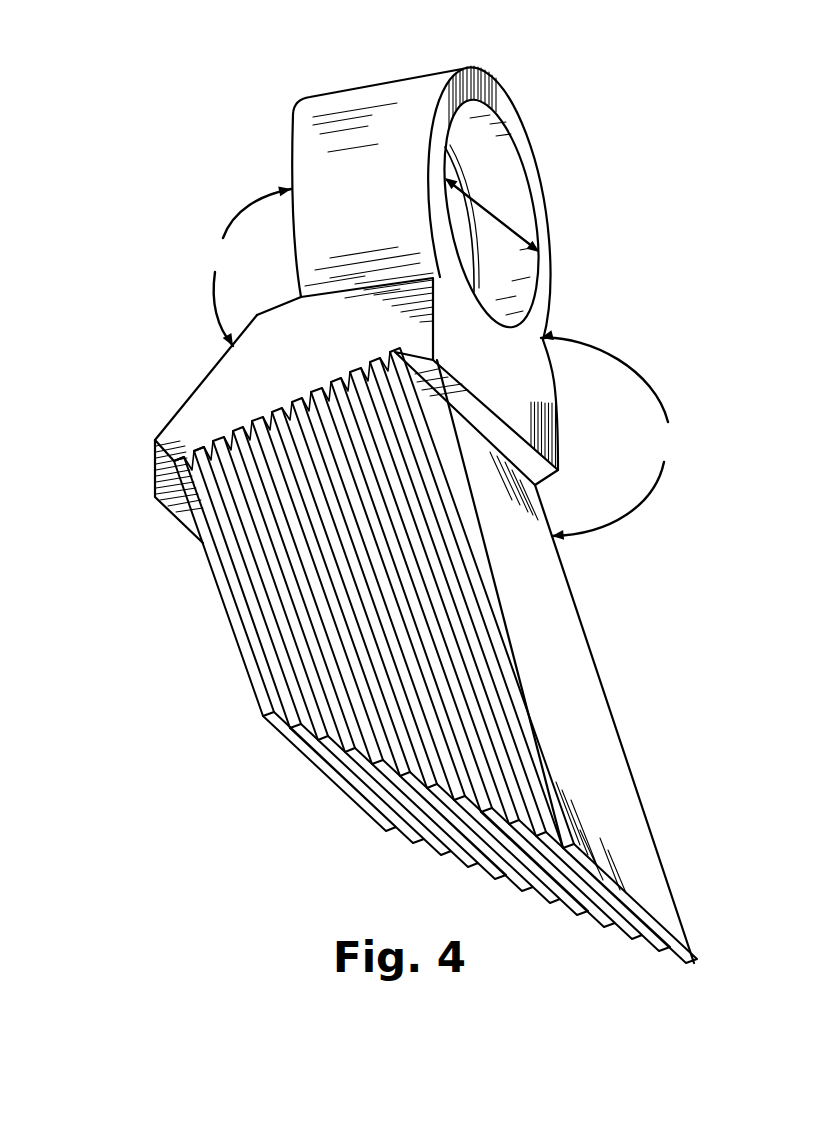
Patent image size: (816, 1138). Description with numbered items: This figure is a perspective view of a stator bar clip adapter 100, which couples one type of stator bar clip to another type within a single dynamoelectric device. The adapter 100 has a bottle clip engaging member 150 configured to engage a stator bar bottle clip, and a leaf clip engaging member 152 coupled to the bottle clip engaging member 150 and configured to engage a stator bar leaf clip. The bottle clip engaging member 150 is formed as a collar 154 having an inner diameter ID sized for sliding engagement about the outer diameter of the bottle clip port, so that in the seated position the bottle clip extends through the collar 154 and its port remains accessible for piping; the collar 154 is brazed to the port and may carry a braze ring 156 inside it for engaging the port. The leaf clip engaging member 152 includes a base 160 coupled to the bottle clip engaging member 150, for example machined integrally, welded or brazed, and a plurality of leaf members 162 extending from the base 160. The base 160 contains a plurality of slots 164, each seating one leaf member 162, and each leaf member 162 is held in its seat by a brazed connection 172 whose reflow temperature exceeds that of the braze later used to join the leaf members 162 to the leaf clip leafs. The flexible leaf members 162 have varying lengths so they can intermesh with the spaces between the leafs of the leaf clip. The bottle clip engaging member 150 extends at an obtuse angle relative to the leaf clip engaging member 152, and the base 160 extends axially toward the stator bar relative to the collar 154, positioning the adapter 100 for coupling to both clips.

The adapter 100 is at (605, 225).
The bottle clip engaging member 150 is at (291, 101).
The leaf clip engaging member 152 is at (133, 437).
The collar 154 is at (312, 156).
The braze ring 156 is at (470, 243).
The base 160 is at (227, 398).
The leaf members 162 is at (510, 547).
The slots 164 is at (197, 455).
The brazed connection 172 is at (338, 402).
The inner diameter ID is at (493, 210).